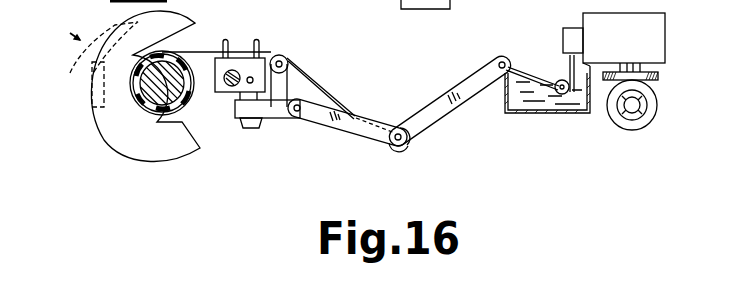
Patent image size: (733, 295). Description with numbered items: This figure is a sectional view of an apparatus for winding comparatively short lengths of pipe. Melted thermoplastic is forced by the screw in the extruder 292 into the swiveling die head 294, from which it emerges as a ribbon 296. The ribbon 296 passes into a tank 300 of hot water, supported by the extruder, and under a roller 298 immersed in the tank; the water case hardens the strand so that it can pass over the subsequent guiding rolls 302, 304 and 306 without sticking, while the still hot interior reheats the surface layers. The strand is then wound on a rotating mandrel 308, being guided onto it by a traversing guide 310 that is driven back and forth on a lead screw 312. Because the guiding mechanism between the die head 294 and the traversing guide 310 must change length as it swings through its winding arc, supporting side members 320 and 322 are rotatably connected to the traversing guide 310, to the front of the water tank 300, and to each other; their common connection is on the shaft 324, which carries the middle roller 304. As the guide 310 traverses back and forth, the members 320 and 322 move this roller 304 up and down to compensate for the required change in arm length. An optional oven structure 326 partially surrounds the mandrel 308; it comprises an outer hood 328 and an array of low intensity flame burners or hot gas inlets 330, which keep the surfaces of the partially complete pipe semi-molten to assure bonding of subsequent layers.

The extruder 292 is at (630, 121).
The swiveling die head 294 is at (647, 30).
The ribbon 296 is at (528, 66).
The roller 298 is at (557, 79).
The tank 300 is at (546, 115).
The guiding roll 302 is at (493, 61).
The middle roller 304 is at (401, 152).
The guiding roll 306 is at (290, 60).
The rotating mandrel 308 is at (163, 97).
The traversing guide 310 is at (225, 42).
The lead screw 312 is at (233, 86).
The supporting side member 320 is at (326, 124).
The supporting side member 322 is at (467, 102).
The shaft 324 is at (397, 128).
The oven structure 326 is at (55, 36).
The outer hood 328 is at (117, 133).
The low intensity flame burners or hot gas inlets 330 is at (92, 73).